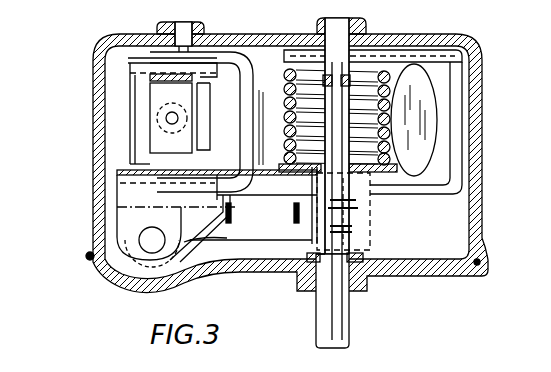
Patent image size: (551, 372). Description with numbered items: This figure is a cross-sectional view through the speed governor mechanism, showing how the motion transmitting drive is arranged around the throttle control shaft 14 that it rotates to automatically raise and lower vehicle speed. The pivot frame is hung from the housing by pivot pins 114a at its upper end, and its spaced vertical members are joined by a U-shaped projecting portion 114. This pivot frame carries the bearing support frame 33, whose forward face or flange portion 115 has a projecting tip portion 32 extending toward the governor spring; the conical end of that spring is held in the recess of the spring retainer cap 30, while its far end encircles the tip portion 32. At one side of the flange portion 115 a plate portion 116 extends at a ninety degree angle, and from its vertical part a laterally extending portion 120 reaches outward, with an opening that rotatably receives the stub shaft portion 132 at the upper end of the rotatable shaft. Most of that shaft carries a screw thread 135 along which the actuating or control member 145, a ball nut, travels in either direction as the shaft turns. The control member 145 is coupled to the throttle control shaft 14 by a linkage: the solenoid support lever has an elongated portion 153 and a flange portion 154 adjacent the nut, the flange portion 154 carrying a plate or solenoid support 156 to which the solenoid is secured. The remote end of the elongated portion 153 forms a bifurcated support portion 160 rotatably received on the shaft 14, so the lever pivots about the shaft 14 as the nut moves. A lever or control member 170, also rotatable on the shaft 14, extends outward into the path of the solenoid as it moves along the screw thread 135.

The throttle control shaft 14 is at (350, 312).
The spring retainer cap 30 is at (427, 115).
The projecting tip portion 32 is at (270, 96).
The bearing support frame 33 is at (88, 108).
The U-shaped projecting portion 114 is at (260, 100).
The pivot pins 114a is at (172, 43).
The forward face or flange portion 115 is at (285, 172).
The plate portion 116 is at (128, 63).
The laterally extending portion 120 is at (140, 96).
The stub shaft portion 132 is at (165, 118).
The screw thread 135 is at (148, 140).
The actuating or control member 145 is at (137, 130).
The elongated portion 153 is at (288, 205).
The flange portion 154 is at (125, 210).
The plate or solenoid support 156 is at (127, 286).
The bifurcated support portion 160 is at (357, 225).
The lever or control member 170 is at (207, 268).